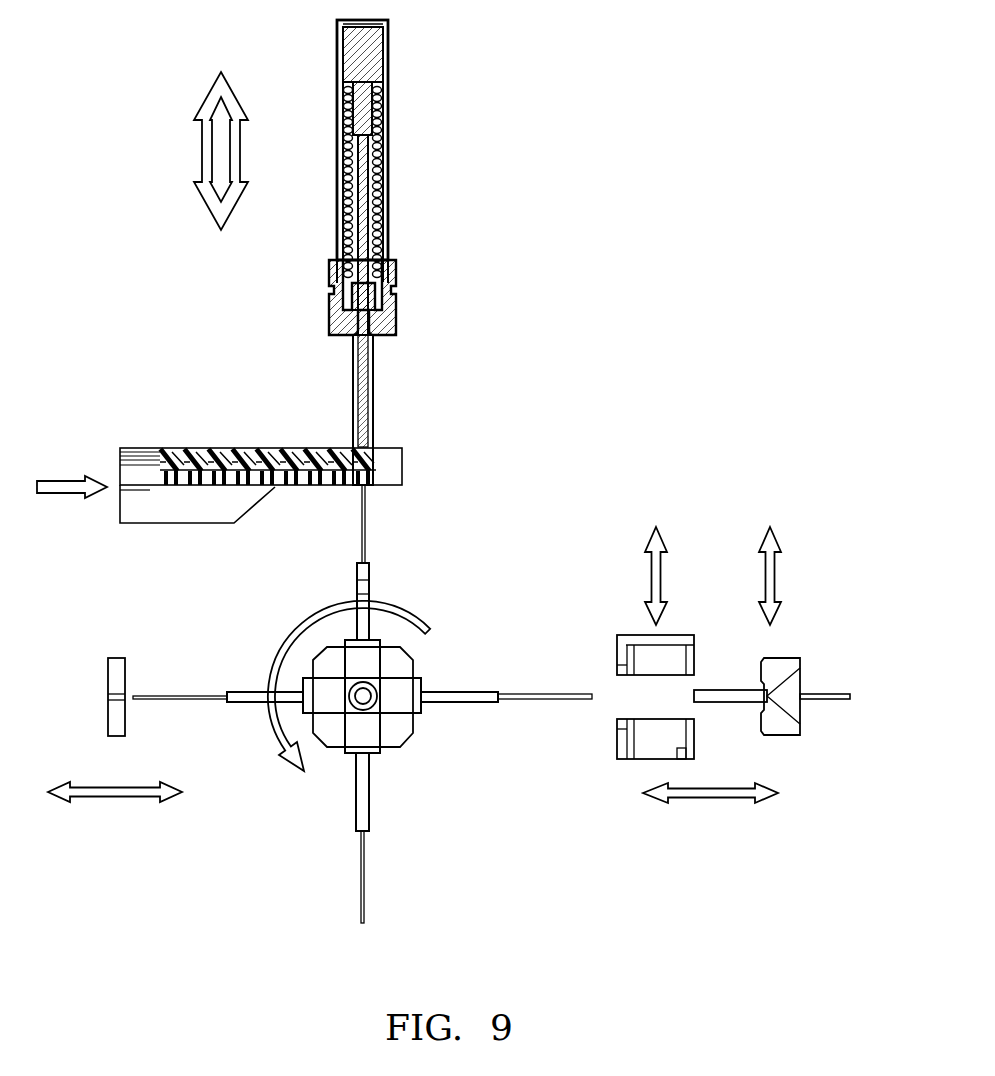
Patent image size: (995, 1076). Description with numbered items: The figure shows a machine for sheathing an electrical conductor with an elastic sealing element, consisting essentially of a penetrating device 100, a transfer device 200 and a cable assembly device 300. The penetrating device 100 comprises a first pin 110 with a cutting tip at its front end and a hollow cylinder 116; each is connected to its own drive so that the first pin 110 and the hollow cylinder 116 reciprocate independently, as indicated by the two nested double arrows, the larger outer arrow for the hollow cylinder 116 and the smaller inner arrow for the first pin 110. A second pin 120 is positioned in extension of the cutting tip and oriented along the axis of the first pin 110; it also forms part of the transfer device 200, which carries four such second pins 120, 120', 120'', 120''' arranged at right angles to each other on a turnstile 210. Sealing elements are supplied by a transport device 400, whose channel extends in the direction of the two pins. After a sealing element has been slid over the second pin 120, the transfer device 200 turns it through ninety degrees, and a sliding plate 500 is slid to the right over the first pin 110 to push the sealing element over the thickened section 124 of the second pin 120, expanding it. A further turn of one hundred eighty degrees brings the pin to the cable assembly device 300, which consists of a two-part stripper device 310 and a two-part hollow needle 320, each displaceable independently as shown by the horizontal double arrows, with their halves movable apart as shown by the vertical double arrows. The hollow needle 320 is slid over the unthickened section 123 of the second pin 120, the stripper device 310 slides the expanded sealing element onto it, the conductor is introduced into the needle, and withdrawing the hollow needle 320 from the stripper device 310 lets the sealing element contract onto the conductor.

The penetrating device 100 is at (477, 133).
The first pin 110 is at (363, 373).
The hollow cylinder 116 is at (373, 405).
The second pin 120 is at (426, 593).
The second pin 120' is at (218, 648).
The second pin 120'' is at (396, 838).
The second pin 120''' is at (506, 651).
The unthickened section 123 is at (364, 530).
The thickened section 124 is at (356, 592).
The transfer device 200 is at (228, 848).
The turnstile 210 is at (400, 735).
The cable assembly device 300 is at (806, 600).
The stripper device 310 is at (617, 740).
The hollow needle 320 is at (727, 690).
The transport device 400 is at (125, 498).
The sliding plate 500 is at (112, 680).